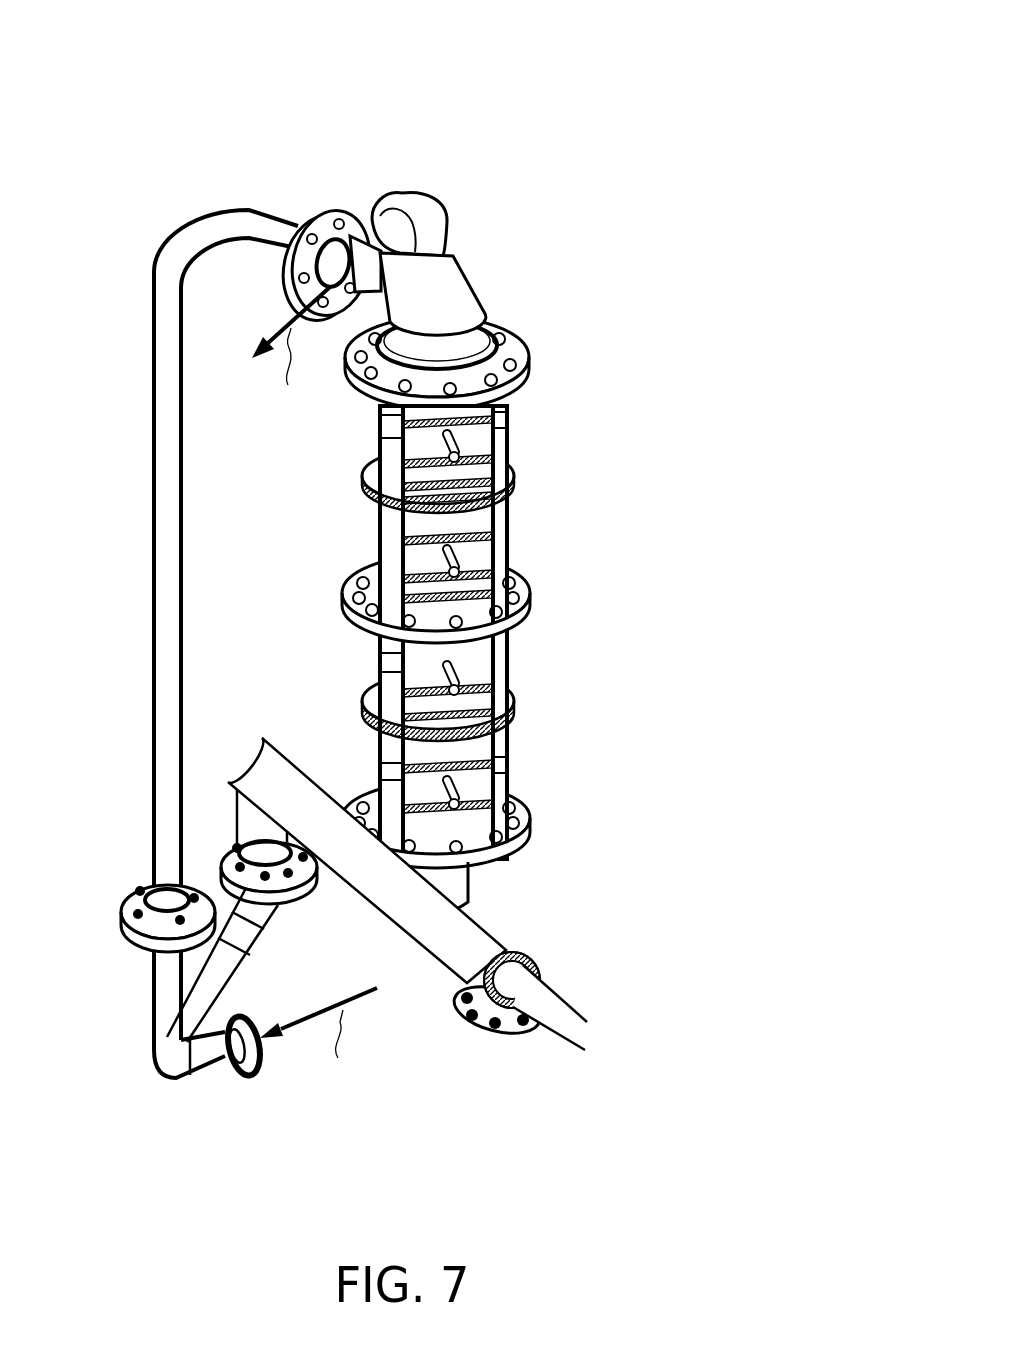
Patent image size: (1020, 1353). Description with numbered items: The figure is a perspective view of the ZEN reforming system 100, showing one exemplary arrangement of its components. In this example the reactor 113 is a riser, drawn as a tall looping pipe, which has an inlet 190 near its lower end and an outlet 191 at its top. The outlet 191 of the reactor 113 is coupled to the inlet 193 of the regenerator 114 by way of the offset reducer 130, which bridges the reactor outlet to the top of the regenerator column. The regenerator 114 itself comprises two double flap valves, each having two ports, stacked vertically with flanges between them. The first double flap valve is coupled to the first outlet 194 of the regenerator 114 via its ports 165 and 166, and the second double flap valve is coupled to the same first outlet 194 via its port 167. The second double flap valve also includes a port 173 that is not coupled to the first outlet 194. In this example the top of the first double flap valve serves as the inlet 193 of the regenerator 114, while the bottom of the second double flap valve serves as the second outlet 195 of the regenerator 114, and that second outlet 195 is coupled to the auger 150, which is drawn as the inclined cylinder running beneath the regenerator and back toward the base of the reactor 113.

The ZEN reforming system 100 is at (703, 96).
The reactor 113 is at (132, 602).
The regenerator 114 is at (590, 300).
The offset reducer 130 is at (460, 266).
The auger 150 is at (270, 740).
The port 165 is at (459, 437).
The port 166 is at (459, 552).
The port 167 is at (459, 668).
The port 173 is at (459, 784).
The inlet 190 is at (152, 903).
The outlet 191 is at (307, 230).
The inlet 193 is at (488, 347).
The first outlet 194 is at (453, 457).
The second outlet 195 is at (493, 863).